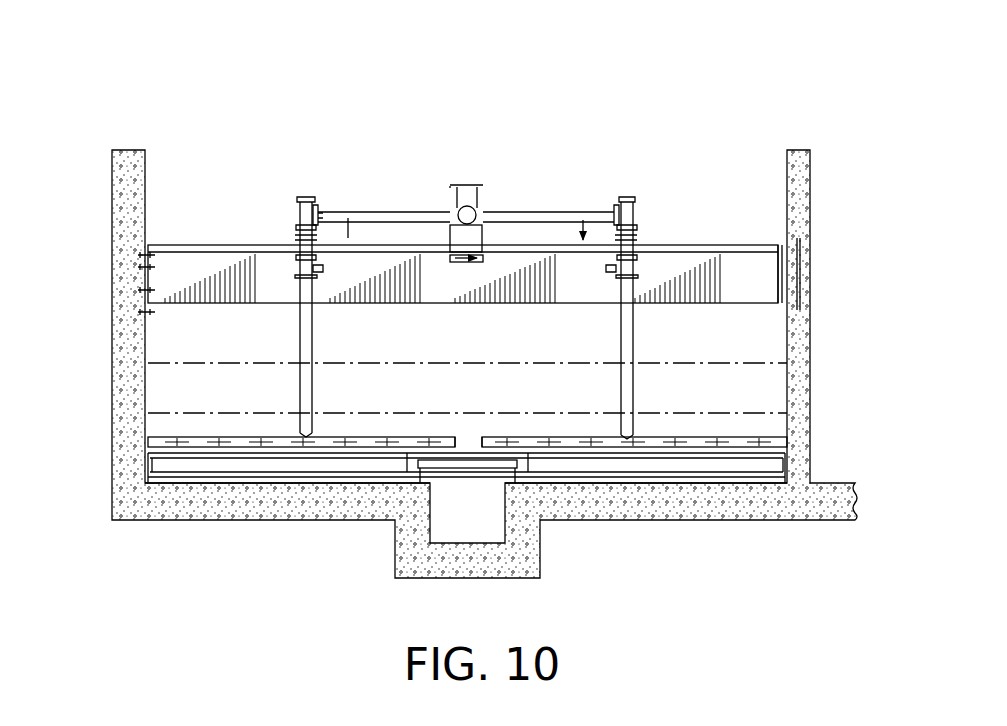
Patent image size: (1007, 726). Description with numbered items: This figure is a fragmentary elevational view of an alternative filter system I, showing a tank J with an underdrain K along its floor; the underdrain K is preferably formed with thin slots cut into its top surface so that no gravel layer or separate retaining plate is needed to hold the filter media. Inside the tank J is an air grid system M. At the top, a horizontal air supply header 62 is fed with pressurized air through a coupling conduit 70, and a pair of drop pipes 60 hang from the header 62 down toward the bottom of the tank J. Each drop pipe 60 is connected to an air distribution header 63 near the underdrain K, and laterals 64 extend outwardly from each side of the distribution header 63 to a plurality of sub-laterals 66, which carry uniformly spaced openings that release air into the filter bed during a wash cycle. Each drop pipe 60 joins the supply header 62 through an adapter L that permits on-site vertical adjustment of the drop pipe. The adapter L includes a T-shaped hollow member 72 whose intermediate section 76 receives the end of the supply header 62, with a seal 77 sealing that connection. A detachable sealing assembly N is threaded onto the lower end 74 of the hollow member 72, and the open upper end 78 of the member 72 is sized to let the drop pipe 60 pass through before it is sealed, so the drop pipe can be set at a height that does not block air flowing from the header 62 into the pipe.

The drop pipe 60 is at (630, 397).
The air supply header 62 is at (512, 212).
The air distribution header 63 is at (282, 443).
The lateral 64 is at (583, 432).
The sub-lateral 66 is at (458, 437).
The coupling conduit 70 is at (467, 176).
The T-shaped hollow member 72 is at (318, 193).
The lower end 74 is at (300, 244).
The intermediate section 76 is at (618, 217).
The seal 77 is at (320, 232).
The upper end 78 is at (300, 197).
The filter system I is at (190, 140).
The tank J is at (113, 362).
The underdrain K is at (365, 462).
The adapter L is at (284, 214).
The air grid system M is at (588, 178).
The sealing assembly N is at (300, 246).